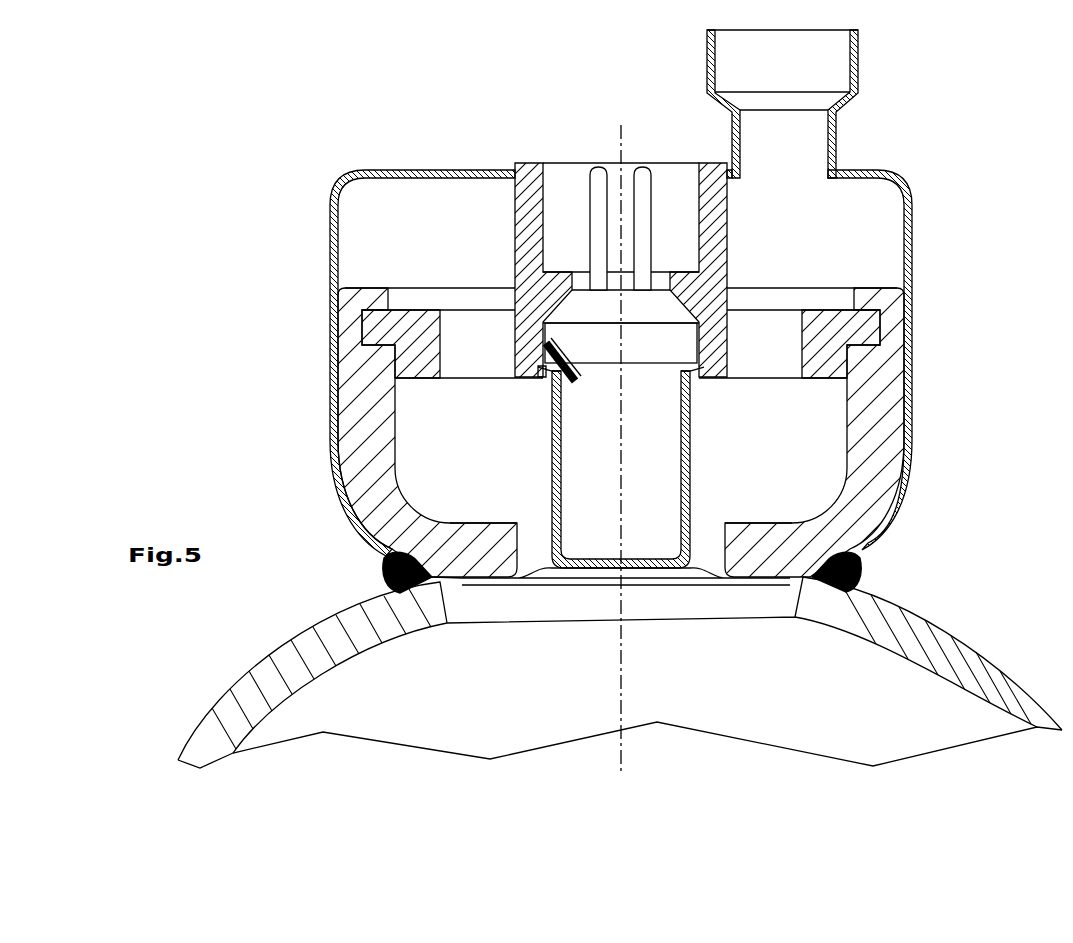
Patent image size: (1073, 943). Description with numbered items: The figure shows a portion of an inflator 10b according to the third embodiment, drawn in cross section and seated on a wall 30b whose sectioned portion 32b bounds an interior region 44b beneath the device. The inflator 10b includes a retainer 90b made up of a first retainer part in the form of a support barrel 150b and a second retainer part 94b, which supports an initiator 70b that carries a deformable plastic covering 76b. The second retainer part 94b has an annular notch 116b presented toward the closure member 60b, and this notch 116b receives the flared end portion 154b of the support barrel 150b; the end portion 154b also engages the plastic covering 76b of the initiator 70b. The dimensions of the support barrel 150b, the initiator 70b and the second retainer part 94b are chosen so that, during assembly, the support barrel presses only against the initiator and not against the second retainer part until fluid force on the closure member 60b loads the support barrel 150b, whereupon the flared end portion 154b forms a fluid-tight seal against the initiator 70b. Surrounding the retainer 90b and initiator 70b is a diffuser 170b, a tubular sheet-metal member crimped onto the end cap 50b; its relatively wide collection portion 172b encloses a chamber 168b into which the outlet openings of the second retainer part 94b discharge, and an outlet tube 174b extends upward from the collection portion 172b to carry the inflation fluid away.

The inflator 10b is at (257, 442).
The container/tank wall 30b is at (216, 697).
The tank wall section 32b is at (282, 642).
The tank interior 44b is at (768, 696).
The end cap 50b is at (377, 469).
The closure member 60b is at (519, 592).
The initiator 70b is at (660, 190).
The deformable plastic covering 76b is at (538, 343).
The retainer 90b is at (565, 152).
The second retainer part 94b is at (526, 158).
The annular notch 116b is at (698, 380).
The support barrel 150b is at (700, 470).
The flared end portion 154b is at (546, 376).
The chamber 168b is at (826, 236).
The diffuser 170b is at (375, 170).
The collection portion 172b is at (912, 432).
The outlet tube 174b is at (860, 73).